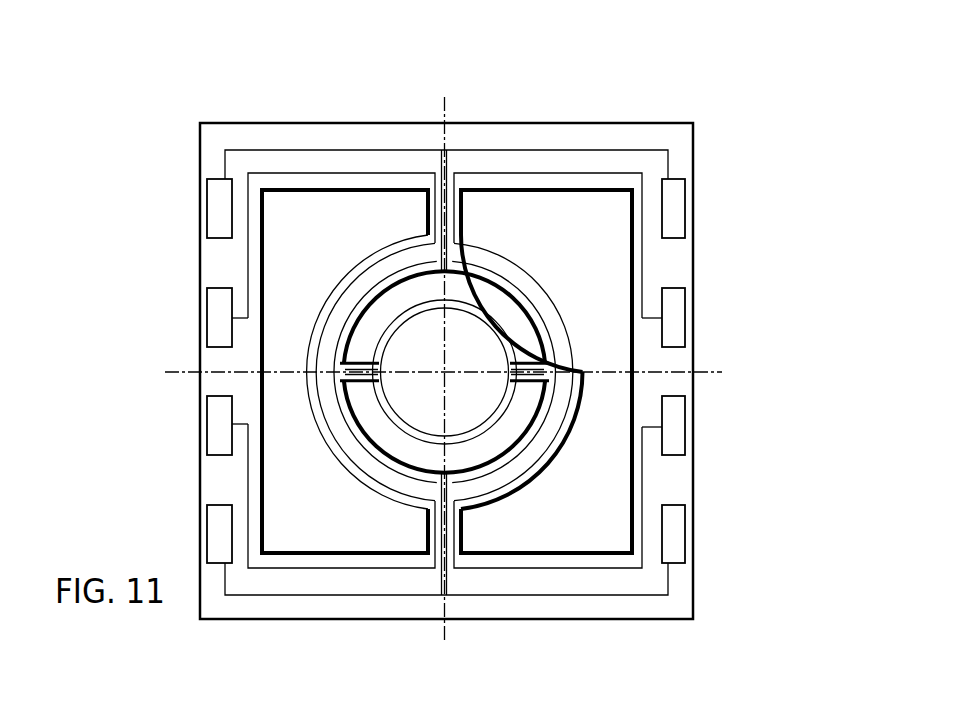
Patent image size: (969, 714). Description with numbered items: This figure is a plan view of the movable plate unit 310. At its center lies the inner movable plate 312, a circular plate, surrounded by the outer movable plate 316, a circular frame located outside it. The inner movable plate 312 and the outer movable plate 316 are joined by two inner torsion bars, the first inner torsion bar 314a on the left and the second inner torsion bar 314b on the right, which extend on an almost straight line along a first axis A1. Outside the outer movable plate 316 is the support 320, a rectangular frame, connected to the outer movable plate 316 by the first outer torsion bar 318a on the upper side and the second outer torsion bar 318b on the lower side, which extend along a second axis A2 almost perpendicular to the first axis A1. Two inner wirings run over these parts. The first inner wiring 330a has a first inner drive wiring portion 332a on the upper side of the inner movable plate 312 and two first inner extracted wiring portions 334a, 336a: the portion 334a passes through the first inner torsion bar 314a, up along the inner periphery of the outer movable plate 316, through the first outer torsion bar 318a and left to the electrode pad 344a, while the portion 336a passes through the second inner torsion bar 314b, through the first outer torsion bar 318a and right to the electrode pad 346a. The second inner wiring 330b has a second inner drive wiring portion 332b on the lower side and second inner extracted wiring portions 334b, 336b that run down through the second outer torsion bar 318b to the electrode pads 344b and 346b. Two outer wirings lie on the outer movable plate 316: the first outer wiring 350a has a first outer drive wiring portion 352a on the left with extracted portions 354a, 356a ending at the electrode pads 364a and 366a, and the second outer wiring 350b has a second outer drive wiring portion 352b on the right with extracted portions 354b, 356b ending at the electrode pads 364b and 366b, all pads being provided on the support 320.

The movable plate unit 310 is at (197, 113).
The support 320 is at (265, 124).
The first outer torsion bar 318a is at (436, 205).
The second outer torsion bar 318b is at (467, 552).
The inner movable plate 312 is at (392, 315).
The first inner torsion bar 314a is at (362, 388).
The second inner torsion bar 314b is at (533, 386).
The outer movable plate 316 is at (549, 278).
The first inner wiring 330a is at (527, 208).
The first inner drive wiring portion 332a is at (503, 273).
The first inner extracted wiring portion 334a is at (468, 303).
The first inner extracted wiring portion 336a is at (537, 267).
The second inner wiring 330b is at (520, 534).
The second inner drive wiring portion 332b is at (508, 464).
The second inner extracted wiring portion 334b is at (472, 438).
The second inner extracted wiring portion 336b is at (540, 473).
The electrode pad 344a is at (210, 212).
The electrode pad 344b is at (210, 532).
The electrode pad 346a is at (684, 212).
The electrode pad 346b is at (684, 532).
The electrode pad 364a is at (210, 301).
The electrode pad 364b is at (675, 303).
The electrode pad 366a is at (210, 424).
The electrode pad 366b is at (678, 440).
The first outer wiring 350a is at (323, 433).
The first outer drive wiring portion 352a is at (314, 412).
The first outer extracted wiring portion 354a is at (250, 292).
The first outer extracted wiring portion 356a is at (341, 538).
The second outer wiring 350b is at (647, 370).
The second outer drive wiring portion 352b is at (578, 353).
The second outer extracted wiring portion 354b is at (643, 302).
The second outer extracted wiring portion 356b is at (643, 441).
The first axis A1 is at (175, 368).
The second axis A2 is at (453, 110).